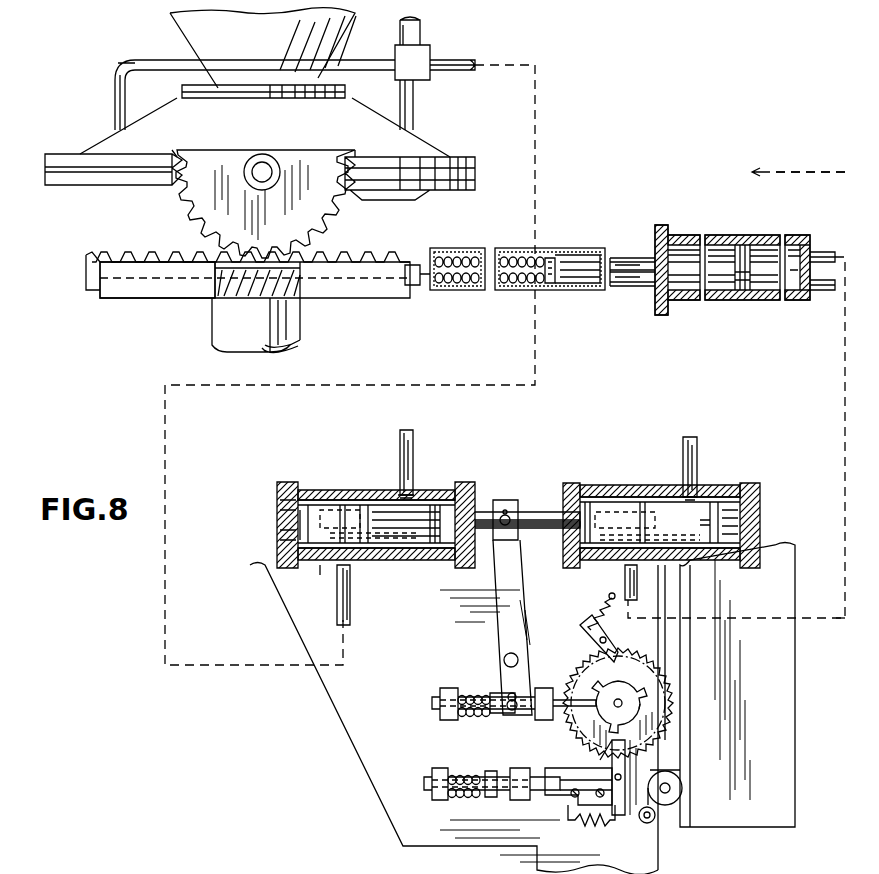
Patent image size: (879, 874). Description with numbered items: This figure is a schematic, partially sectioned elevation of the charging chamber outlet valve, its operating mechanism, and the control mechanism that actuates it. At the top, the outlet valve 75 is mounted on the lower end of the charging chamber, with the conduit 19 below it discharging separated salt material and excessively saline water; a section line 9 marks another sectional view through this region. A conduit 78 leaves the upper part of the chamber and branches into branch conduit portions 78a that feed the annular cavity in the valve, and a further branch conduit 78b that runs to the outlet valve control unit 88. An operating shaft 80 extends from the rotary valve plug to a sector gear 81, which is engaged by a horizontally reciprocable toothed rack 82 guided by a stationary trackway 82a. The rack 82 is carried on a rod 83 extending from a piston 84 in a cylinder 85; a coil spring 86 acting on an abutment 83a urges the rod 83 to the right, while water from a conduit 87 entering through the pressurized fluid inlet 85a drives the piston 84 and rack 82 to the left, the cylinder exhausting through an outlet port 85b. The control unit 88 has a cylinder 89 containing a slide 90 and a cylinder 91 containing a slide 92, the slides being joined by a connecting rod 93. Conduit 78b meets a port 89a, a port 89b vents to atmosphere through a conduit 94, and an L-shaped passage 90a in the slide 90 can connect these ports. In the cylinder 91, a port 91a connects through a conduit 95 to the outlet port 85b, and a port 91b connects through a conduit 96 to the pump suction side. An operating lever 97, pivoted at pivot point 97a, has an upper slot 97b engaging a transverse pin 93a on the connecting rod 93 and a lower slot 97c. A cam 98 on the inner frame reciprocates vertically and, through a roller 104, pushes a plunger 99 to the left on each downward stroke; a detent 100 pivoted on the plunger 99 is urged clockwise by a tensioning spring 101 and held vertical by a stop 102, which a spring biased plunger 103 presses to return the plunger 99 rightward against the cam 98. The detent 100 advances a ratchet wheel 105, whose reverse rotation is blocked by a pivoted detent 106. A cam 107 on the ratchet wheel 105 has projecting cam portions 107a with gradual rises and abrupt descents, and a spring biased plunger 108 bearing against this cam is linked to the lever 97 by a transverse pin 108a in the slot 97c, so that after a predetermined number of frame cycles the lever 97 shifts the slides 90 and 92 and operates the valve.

The section line 9 is at (282, 39).
The conduit 19 is at (300, 332).
The outlet valve 75 is at (410, 150).
The conduit 78 is at (410, 36).
The branch conduit portions 78a is at (155, 68).
The branch conduit 78b is at (463, 60).
The operating shaft 80 is at (265, 158).
The sector gear 81 is at (322, 160).
The toothed rack 82 is at (366, 262).
The stationary trackway 82a is at (165, 290).
The rod 83 is at (522, 255).
The abutment 83a is at (550, 283).
The piston 84 is at (745, 245).
The cylinder 85 is at (695, 235).
The pressurized fluid inlet 85a is at (813, 248).
The outlet port 85b is at (803, 300).
The coil spring 86 is at (515, 290).
The conduit 87 is at (788, 172).
The outlet valve control unit 88 is at (518, 500).
The cylinder 89 is at (330, 490).
The port 89a is at (348, 565).
The port 89b is at (410, 492).
The slide 90 is at (388, 548).
The L-shaped passage 90a is at (320, 565).
The cylinder 91 is at (627, 490).
The port 91a is at (625, 572).
The port 91b is at (705, 492).
The slide 92 is at (682, 548).
The connecting rod 93 is at (535, 512).
The transverse pin 93a is at (532, 528).
The conduit 94 is at (400, 448).
The conduit 95 is at (836, 620).
The conduit 96 is at (695, 470).
The operating lever 97 is at (512, 622).
The pivot point 97a is at (504, 660).
The slot 97b is at (503, 500).
The slot 97c is at (518, 700).
The cam 98 is at (740, 820).
The plunger 99 is at (640, 822).
The detent 100 is at (640, 755).
The tensioning spring 101 is at (590, 826).
The stop 102 is at (568, 808).
The spring biased plunger 103 is at (535, 800).
The roller 104 is at (667, 805).
The ratchet wheel 105 is at (585, 726).
The detent 106 is at (596, 630).
The cam 107 is at (626, 688).
The cam portions 107a is at (640, 706).
The spring biased plunger 108 is at (540, 720).
The transverse pin 108a is at (512, 722).